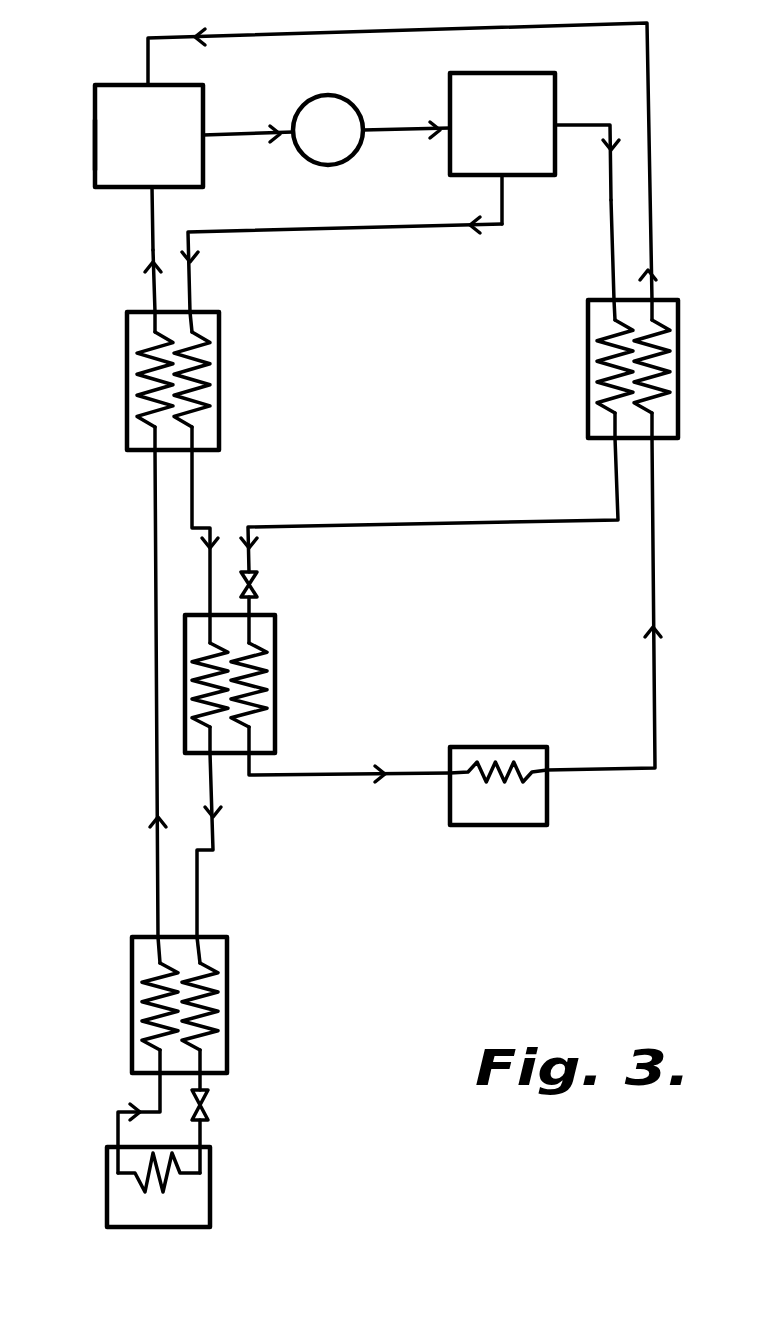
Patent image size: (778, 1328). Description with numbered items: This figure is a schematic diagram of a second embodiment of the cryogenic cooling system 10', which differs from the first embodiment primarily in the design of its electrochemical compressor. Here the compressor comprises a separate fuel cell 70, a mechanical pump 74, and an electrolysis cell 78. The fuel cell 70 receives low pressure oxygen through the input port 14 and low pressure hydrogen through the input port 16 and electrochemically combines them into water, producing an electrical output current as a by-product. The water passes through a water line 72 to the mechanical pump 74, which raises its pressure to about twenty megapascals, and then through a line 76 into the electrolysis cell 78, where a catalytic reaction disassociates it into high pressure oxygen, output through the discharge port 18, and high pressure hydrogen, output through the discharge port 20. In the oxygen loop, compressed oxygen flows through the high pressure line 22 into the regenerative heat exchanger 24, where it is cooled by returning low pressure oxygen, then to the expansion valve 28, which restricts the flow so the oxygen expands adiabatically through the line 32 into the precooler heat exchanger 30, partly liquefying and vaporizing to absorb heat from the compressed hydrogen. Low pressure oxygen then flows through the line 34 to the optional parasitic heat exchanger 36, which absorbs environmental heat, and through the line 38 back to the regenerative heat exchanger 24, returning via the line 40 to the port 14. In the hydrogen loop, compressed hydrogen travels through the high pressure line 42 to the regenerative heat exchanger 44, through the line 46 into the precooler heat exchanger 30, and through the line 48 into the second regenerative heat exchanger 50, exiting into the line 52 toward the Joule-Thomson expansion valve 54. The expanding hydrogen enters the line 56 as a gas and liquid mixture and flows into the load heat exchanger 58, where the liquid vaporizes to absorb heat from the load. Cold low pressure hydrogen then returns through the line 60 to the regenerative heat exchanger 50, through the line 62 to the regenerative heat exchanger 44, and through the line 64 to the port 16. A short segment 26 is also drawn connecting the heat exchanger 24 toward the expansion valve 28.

The cryogenic cooling system 10' is at (380, 831).
The low pressure input port for oxygen 14 is at (140, 84).
The low pressure input port for hydrogen 16 is at (150, 190).
The discharge port for high pressure oxygen 18 is at (562, 124).
The discharge port for high pressure hydrogen 20 is at (514, 176).
The high pressure line 22 is at (610, 246).
The regenerative heat exchanger 24 is at (587, 360).
The pipe from heat exchanger to expansion valve 26 is at (520, 518).
The expansion valve 28 is at (258, 580).
The precooler heat exchanger 30 is at (276, 685).
The line 32 is at (258, 605).
The line 34 is at (312, 775).
The parasitic heat exchanger 36 is at (494, 747).
The line 38 is at (656, 578).
The line 40 is at (651, 182).
The high pressure line 42 is at (352, 233).
The regenerative heat exchanger 44 is at (220, 372).
The line 46 is at (193, 517).
The line 48 is at (214, 840).
The second regenerative heat exchanger 50 is at (228, 1010).
The line 52 is at (202, 1082).
The Joule-Thomson expansion valve 54 is at (210, 1100).
The line 56 is at (202, 1130).
The load heat exchanger 58 is at (211, 1185).
The line 60 is at (117, 1122).
The line 62 is at (156, 890).
The line 64 is at (150, 284).
The fuel cell 70 is at (94, 148).
The water line 72 is at (240, 136).
The mechanical pump 74 is at (334, 97).
The line 76 is at (400, 132).
The electrolysis cell 78 is at (495, 74).